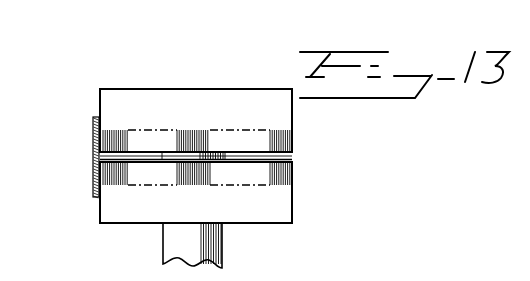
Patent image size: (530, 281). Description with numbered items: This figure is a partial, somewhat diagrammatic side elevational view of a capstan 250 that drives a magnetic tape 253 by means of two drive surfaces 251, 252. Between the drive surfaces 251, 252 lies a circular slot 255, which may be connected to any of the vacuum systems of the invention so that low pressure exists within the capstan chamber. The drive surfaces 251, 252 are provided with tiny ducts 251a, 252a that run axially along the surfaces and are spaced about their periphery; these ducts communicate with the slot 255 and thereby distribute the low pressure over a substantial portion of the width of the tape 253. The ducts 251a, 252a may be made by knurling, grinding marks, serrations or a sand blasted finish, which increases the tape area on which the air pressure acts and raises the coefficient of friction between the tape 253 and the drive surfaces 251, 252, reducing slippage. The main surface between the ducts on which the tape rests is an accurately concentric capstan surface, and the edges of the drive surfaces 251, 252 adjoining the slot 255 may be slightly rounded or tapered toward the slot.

The capstan 250 is at (194, 157).
The drive surface 251 is at (292, 108).
The duct 251a is at (270, 139).
The drive surface 252 is at (292, 205).
The duct 252a is at (126, 172).
The magnetic tape 253 is at (95, 128).
The circular slot 255 is at (290, 161).